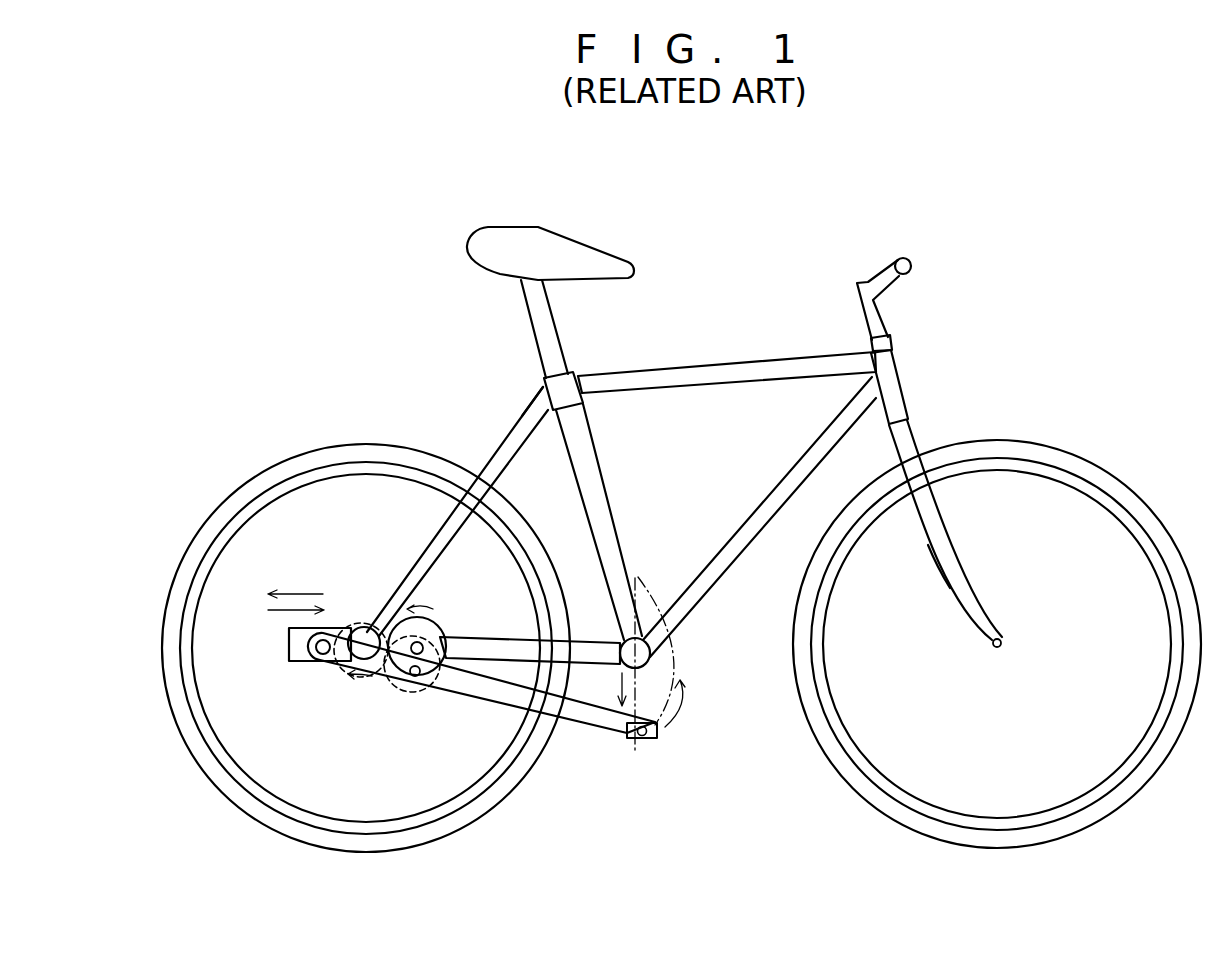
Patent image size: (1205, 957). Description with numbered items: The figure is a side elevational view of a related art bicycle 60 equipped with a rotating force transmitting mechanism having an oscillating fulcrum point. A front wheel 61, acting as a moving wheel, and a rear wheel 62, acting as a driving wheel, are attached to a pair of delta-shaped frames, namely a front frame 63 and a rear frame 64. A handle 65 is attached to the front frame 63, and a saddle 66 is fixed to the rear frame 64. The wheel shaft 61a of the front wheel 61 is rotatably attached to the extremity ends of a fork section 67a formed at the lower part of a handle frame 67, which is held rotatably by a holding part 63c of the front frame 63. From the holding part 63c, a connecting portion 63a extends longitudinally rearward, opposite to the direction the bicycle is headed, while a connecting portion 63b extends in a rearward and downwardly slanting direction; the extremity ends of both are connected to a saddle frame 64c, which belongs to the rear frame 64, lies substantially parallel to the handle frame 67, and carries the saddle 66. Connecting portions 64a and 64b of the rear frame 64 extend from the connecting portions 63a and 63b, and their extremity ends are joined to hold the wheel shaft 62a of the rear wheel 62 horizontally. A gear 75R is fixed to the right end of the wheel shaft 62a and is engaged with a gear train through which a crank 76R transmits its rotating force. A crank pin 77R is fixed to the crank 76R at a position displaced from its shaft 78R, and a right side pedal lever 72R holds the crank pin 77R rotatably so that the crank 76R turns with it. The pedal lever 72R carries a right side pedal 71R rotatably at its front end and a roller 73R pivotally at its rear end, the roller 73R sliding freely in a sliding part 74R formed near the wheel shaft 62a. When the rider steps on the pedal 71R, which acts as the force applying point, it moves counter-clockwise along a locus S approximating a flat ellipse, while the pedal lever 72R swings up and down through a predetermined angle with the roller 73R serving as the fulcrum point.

The bicycle 60 is at (922, 243).
The front wheel 61 is at (1053, 447).
The wheel shaft 61a is at (1000, 643).
The rear wheel 62 is at (283, 463).
The wheel shaft 62a is at (368, 625).
The front frame 63 is at (772, 475).
The connecting portion 63a is at (700, 367).
The connecting portion 63b is at (752, 552).
The holding part 63c is at (902, 387).
The rear frame 64 is at (486, 462).
The connecting portion 64a is at (518, 422).
The connecting portion 64b is at (602, 637).
The saddle frame 64c is at (602, 467).
The handle 65 is at (875, 270).
The saddle 66 is at (573, 237).
The handle frame 67 is at (890, 342).
The fork section 67a is at (943, 550).
The right side pedal 71R is at (637, 742).
The right side pedal lever 72R is at (472, 697).
The roller 73R is at (314, 660).
The sliding part 74R is at (293, 645).
The gear 75R is at (360, 627).
The crank 76R is at (435, 627).
The crank pin 77R is at (410, 682).
The shaft 78R is at (390, 657).
The locus S is at (673, 658).